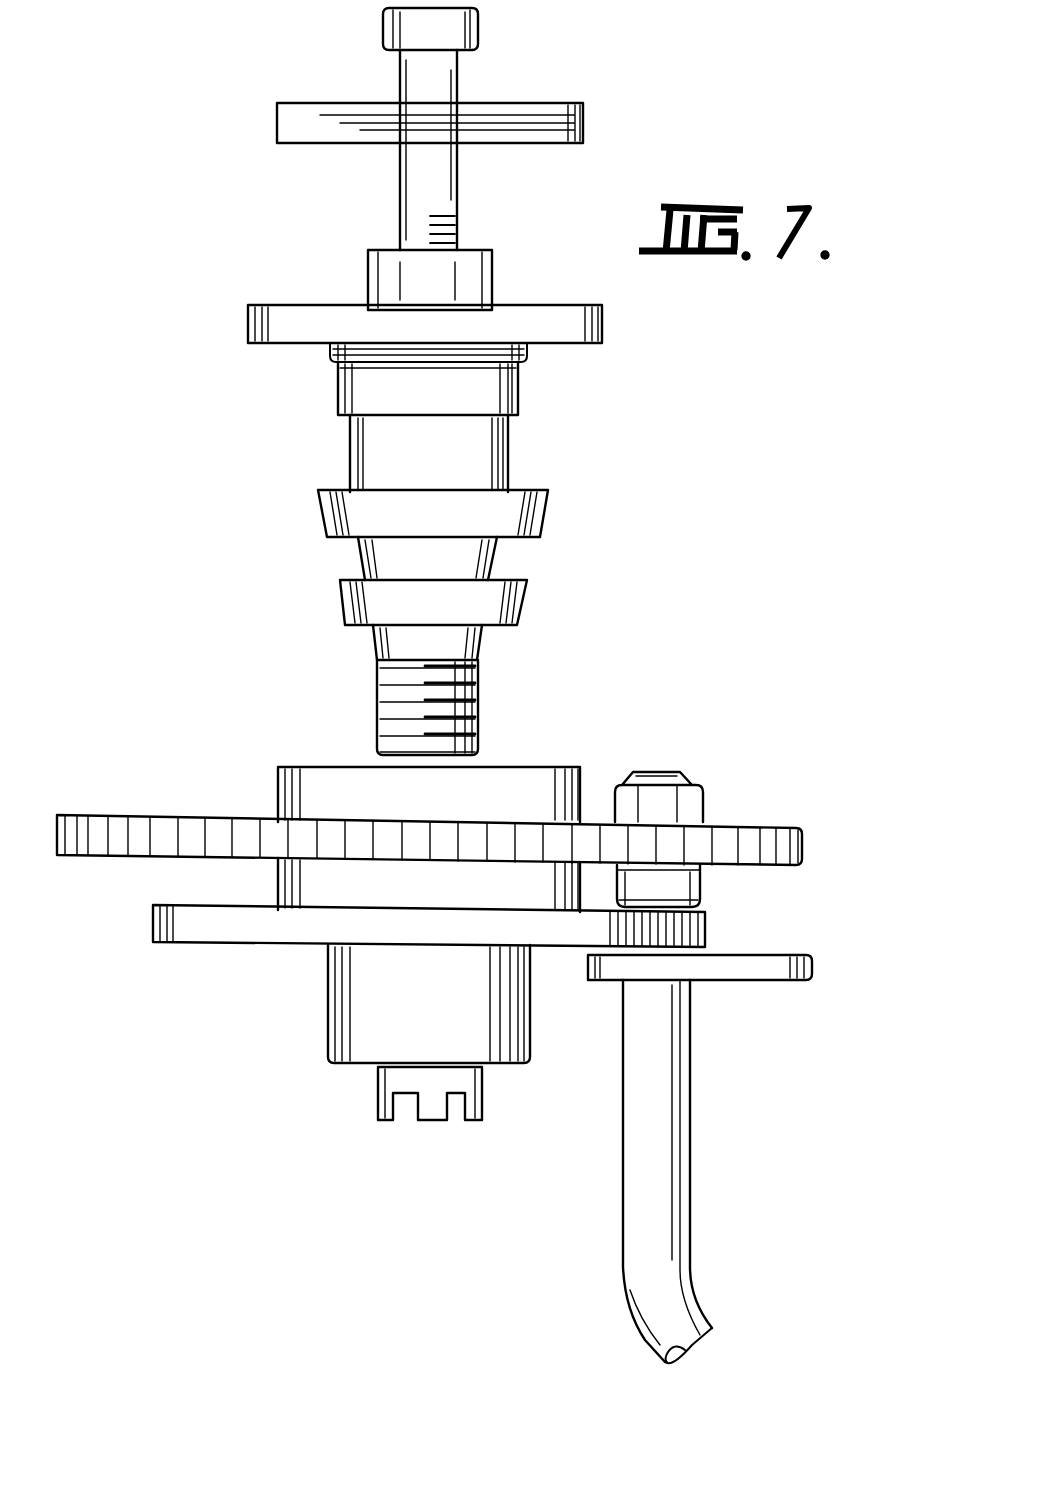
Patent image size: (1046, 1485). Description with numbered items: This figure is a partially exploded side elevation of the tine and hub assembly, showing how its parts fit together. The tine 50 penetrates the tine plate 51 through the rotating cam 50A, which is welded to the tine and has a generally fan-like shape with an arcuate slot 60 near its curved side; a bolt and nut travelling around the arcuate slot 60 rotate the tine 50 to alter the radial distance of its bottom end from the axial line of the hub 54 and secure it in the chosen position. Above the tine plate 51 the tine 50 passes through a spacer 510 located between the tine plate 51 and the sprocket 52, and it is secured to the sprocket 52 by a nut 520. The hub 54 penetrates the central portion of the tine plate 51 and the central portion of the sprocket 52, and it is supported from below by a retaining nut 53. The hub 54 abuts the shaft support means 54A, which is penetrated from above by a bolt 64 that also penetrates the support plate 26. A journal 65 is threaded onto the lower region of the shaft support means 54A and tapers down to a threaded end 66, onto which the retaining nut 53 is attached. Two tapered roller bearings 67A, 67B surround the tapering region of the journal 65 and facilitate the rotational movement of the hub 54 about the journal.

The bolt 64 is at (383, 30).
The support plate 26 is at (287, 124).
The shaft support means 54A is at (280, 330).
The journal 65 is at (458, 463).
The tapered roller bearing 67A is at (327, 520).
The tapered roller bearing 67B is at (345, 610).
The threaded end 66 is at (377, 703).
The hub 54 is at (310, 890).
The nut 520 is at (693, 787).
The sprocket 52 is at (780, 828).
The spacer 510 is at (673, 892).
The tine plate 51 is at (200, 927).
The retaining nut 53 is at (388, 1082).
The rotating cam 50A is at (812, 978).
The arcuate slot 60 is at (742, 978).
The tine 50 is at (658, 1155).